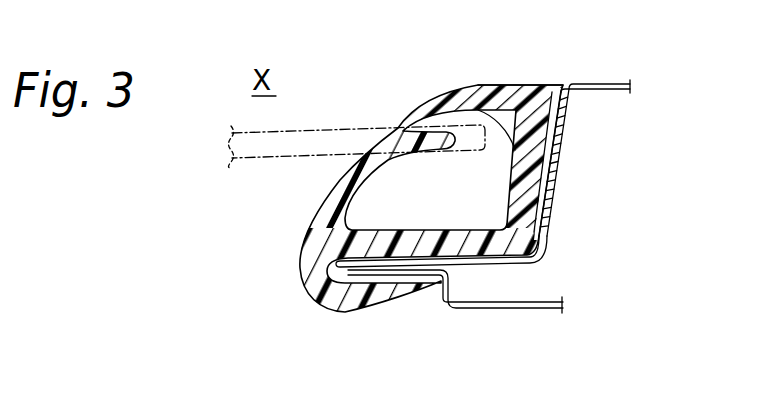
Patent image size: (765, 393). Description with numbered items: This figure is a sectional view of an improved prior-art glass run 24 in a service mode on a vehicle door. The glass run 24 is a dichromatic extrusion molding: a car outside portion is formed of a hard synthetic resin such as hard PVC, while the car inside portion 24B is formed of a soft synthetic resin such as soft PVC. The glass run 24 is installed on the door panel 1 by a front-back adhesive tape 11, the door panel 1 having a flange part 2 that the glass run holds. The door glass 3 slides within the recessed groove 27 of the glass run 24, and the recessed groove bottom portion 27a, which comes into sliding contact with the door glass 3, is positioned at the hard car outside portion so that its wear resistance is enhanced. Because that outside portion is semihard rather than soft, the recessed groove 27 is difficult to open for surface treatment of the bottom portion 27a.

The door panel 1 is at (622, 82).
The flange part 2 is at (406, 297).
The door glass 3 is at (228, 125).
The front-back adhesive tape 11 is at (566, 152).
The glass run 24 is at (510, 84).
The car inside portion 24B is at (527, 264).
The recessed groove 27 is at (447, 192).
The recessed groove bottom portion 27a is at (479, 108).